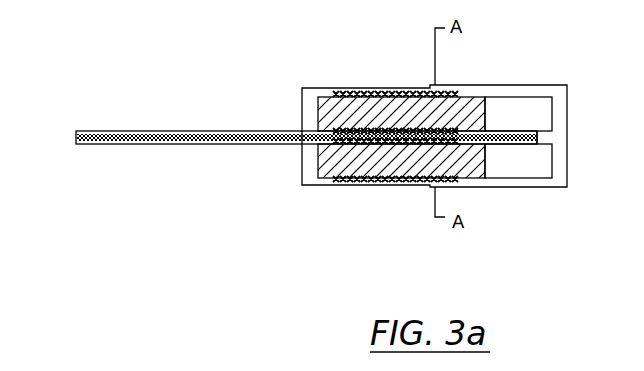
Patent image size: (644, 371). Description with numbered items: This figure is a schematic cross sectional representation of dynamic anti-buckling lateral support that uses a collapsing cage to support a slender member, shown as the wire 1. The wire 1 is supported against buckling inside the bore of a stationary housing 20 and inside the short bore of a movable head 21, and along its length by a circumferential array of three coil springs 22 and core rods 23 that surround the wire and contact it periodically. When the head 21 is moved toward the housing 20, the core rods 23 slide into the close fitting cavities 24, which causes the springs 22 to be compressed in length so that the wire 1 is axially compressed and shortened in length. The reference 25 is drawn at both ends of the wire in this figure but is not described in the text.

The wire 1 is at (533, 160).
The stationary housing 20 is at (309, 127).
The movable head 21 is at (503, 122).
The coil spring 22 is at (375, 93).
The core rod 23 is at (414, 96).
The close fitting cavity 24 is at (530, 113).
The shaft 25 is at (70, 140).